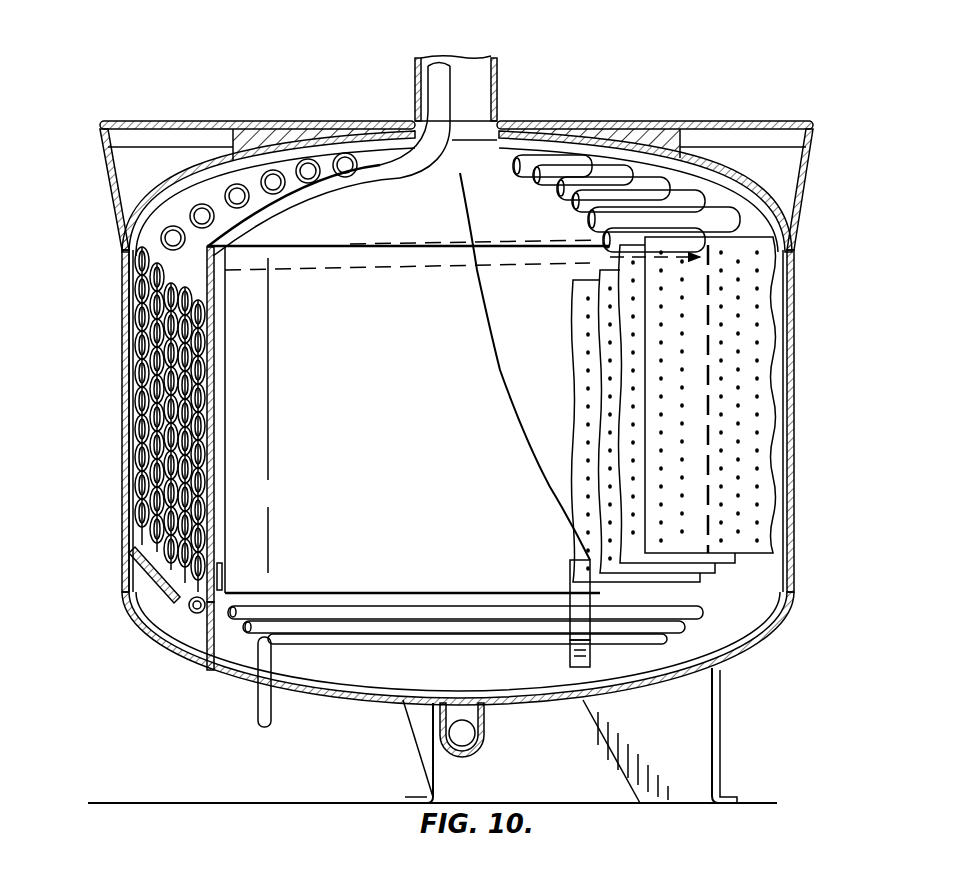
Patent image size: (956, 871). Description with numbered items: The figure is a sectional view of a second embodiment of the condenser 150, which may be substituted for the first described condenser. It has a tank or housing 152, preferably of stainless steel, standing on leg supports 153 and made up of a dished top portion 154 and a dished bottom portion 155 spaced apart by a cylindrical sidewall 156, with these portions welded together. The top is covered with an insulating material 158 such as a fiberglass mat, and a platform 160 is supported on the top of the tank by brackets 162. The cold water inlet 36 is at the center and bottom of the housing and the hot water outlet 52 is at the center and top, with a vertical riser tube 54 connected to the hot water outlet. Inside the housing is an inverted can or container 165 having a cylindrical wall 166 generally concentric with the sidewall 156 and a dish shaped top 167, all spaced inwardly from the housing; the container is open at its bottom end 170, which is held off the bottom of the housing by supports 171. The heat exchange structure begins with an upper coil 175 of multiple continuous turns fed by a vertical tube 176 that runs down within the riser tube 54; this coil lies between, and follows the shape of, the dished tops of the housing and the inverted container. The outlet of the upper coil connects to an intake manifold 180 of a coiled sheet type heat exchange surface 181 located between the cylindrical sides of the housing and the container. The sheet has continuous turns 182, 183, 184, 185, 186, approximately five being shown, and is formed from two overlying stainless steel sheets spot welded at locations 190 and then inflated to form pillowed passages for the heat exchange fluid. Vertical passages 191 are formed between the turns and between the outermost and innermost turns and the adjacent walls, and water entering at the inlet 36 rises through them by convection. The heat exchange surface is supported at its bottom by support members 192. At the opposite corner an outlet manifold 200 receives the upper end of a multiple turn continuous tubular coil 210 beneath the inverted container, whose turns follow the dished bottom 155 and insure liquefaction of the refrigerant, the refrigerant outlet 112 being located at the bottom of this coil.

The cold water inlet 36 is at (470, 738).
The hot water outlet 52 is at (467, 100).
The vertical riser tube 54 is at (500, 84).
The refrigerant outlet 112 is at (260, 720).
The condenser 150 is at (112, 249).
The tank or housing 152 is at (118, 327).
The leg supports 153 is at (440, 790).
The dished top portion 154 is at (182, 186).
The dished bottom portion 155 is at (335, 703).
The cylindrical sidewall 156 is at (122, 560).
The insulating material 158 is at (598, 128).
The platform 160 is at (150, 121).
The brackets 162 is at (104, 170).
The inverted can or container 165 is at (481, 194).
The cylindrical wall 166 is at (214, 300).
The dish shaped top 167 is at (390, 184).
The bottom end 170 is at (373, 594).
The supports 171 is at (212, 634).
The upper coil 175 is at (232, 176).
The vertical tube 176 is at (441, 70).
The intake manifold 180 is at (123, 267).
The coiled sheet type heat exchange surface 181 is at (122, 420).
The turn of heat exchange surface 182 is at (142, 462).
The turn of heat exchange surface 183 is at (152, 488).
The turn of heat exchange surface 184 is at (152, 518).
The turn of heat exchange surface 185 is at (193, 462).
The turn of heat exchange surface 186 is at (182, 526).
The spot weld locations 190 is at (593, 350).
The vertical passages 191 is at (143, 367).
The support members 192 is at (153, 577).
The outlet manifold 200 is at (184, 613).
The multiple turn continuous tubular coil 210 is at (392, 648).